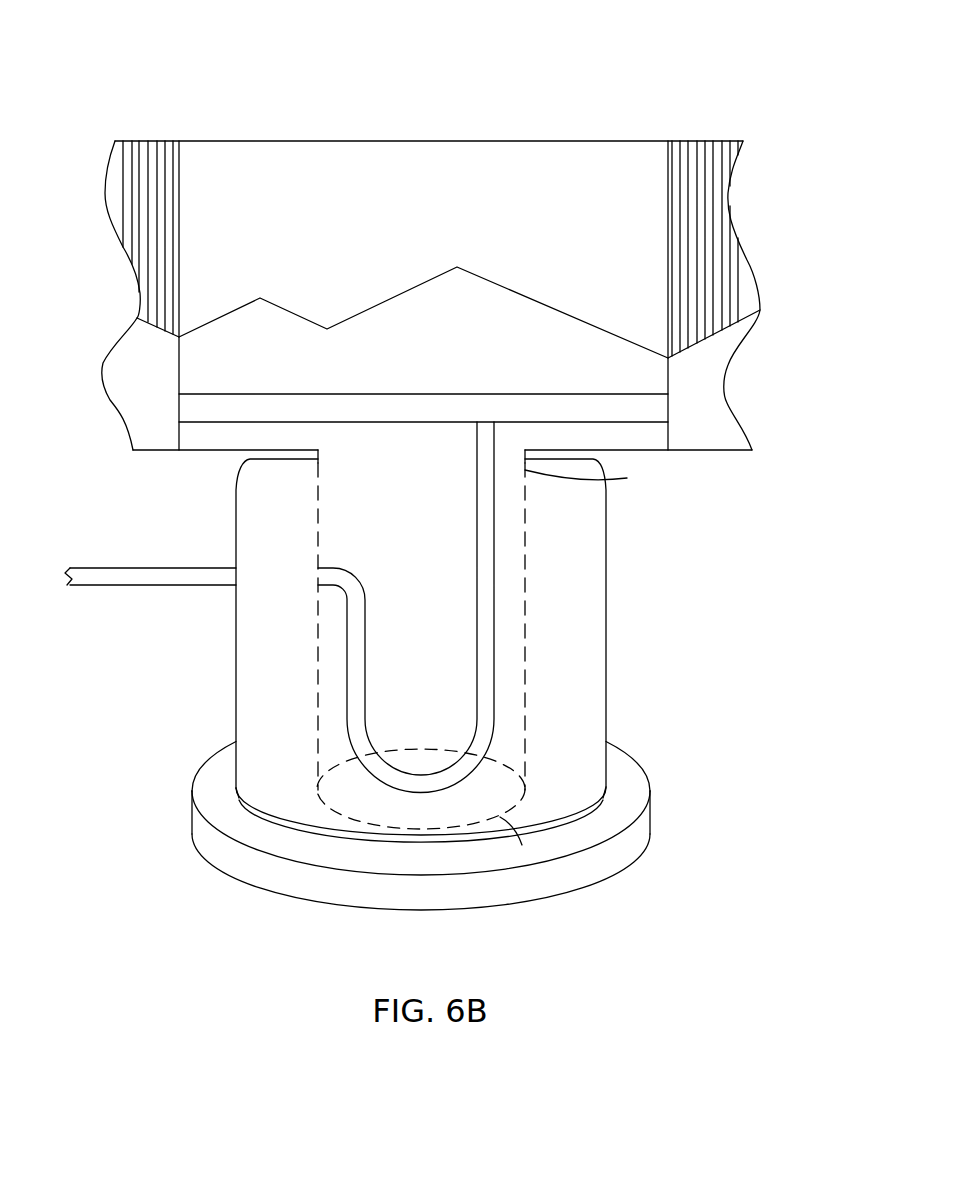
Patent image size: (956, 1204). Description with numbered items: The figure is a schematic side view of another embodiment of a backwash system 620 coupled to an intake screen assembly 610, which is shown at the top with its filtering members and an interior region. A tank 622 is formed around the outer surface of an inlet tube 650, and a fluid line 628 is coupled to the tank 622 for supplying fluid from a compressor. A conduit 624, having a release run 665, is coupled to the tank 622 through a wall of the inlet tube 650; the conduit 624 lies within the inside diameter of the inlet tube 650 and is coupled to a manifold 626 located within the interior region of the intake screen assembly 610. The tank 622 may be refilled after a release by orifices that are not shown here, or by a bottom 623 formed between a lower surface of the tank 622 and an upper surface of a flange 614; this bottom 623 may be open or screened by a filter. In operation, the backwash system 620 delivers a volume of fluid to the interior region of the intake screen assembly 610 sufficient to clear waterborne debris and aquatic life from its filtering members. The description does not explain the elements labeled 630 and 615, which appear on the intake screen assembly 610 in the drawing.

The intake screen assembly 610 is at (786, 326).
The hatched support members 630 is at (717, 141).
The substrate layer 615 is at (387, 365).
The manifold 626 is at (203, 410).
The backwash system 620 is at (457, 688).
The tank 622 is at (585, 627).
The conduit 624 is at (477, 621).
The bottom 623 is at (600, 800).
The release run 665 is at (390, 785).
The flange 614 is at (633, 850).
The fluid line 628 is at (103, 568).
The inlet tube 650 is at (522, 913).